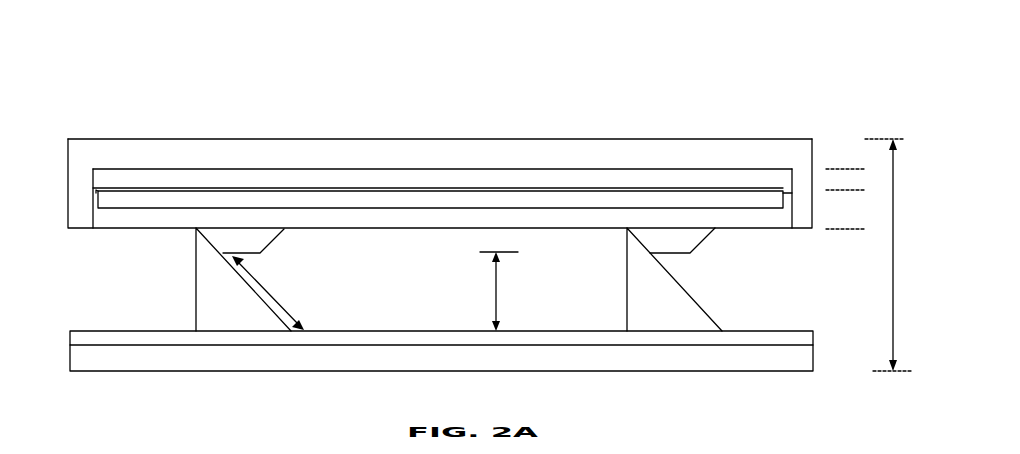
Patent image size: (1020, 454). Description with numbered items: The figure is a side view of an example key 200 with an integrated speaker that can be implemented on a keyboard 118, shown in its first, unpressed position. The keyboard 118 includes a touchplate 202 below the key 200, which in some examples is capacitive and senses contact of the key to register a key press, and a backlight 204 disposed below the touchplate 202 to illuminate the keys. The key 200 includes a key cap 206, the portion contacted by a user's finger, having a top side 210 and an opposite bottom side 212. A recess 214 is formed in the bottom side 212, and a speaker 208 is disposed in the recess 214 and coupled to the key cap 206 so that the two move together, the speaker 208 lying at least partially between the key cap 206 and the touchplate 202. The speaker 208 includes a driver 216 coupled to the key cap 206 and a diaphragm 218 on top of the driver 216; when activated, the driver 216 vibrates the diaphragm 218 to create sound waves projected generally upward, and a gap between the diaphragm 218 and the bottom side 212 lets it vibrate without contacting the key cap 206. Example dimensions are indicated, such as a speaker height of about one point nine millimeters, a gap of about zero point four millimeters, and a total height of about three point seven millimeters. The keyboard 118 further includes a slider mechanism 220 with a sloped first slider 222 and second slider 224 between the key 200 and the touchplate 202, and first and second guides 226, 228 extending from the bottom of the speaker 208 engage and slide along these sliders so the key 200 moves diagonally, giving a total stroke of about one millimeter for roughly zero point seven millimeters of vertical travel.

The keyboard 118 is at (104, 64).
The key 200 is at (648, 111).
The touchplate 202 is at (80, 337).
The backlight 204 is at (80, 363).
The key cap 206 is at (150, 148).
The speaker 208 is at (84, 200).
The top side 210 is at (331, 138).
The bottom side 212 is at (76, 229).
The recess 214 is at (194, 160).
The driver 216 is at (117, 216).
The diaphragm 218 is at (112, 198).
The slider mechanism 220 is at (120, 277).
The first slider 222 is at (196, 292).
The second slider 224 is at (627, 288).
The first guide 226 is at (258, 238).
The second guide 228 is at (683, 238).